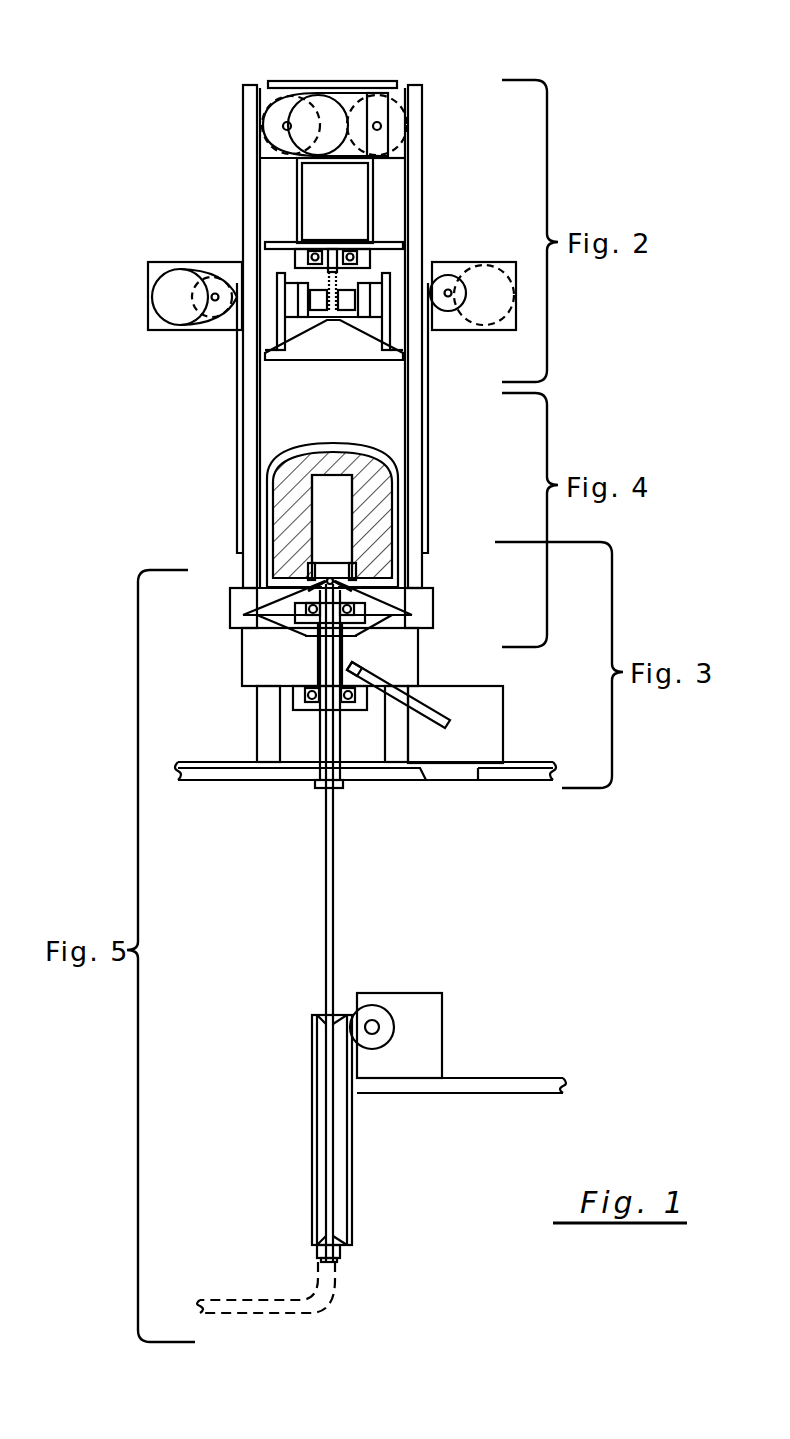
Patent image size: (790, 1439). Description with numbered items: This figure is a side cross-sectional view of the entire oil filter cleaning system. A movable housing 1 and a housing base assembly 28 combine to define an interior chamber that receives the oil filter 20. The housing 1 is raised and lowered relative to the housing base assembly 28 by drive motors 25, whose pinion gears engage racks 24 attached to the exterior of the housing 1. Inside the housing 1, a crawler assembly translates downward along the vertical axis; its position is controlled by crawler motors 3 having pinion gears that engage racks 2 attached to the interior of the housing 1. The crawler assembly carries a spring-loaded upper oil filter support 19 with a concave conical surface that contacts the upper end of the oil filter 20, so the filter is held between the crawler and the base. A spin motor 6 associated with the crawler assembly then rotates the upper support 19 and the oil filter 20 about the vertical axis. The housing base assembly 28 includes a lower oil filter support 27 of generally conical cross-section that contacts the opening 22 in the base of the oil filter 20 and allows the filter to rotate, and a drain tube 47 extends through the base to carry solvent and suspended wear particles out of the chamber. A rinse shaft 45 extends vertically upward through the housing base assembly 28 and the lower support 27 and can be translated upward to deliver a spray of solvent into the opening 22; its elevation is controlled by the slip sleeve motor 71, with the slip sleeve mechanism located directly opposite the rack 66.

The movable housing 1 is at (248, 475).
The racks 2 is at (257, 130).
The crawler motors 3 is at (360, 113).
The spin motor 6 is at (344, 217).
The upper oil filter support 19 is at (383, 337).
The oil filter 20 is at (292, 475).
The opening 22 is at (334, 498).
The racks 24 is at (237, 407).
The drive motors 25 is at (178, 290).
The lower oil filter support 27 is at (358, 593).
The housing base assembly 28 is at (430, 608).
The rinse shaft 45 is at (326, 888).
The drain tube 47 is at (395, 683).
The rack 66 is at (349, 1148).
The slip sleeve motor 71 is at (422, 1035).